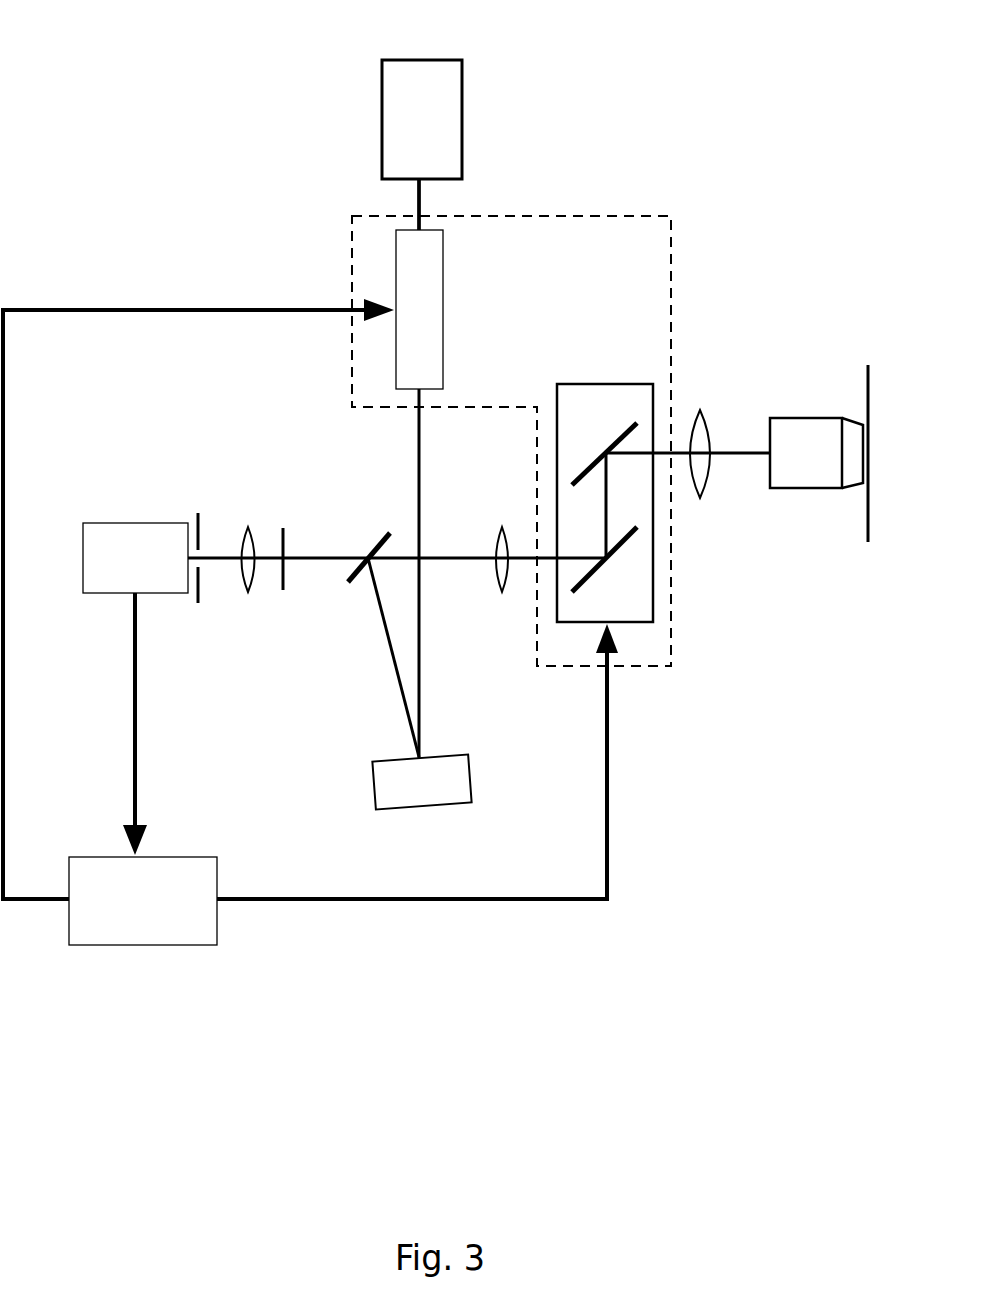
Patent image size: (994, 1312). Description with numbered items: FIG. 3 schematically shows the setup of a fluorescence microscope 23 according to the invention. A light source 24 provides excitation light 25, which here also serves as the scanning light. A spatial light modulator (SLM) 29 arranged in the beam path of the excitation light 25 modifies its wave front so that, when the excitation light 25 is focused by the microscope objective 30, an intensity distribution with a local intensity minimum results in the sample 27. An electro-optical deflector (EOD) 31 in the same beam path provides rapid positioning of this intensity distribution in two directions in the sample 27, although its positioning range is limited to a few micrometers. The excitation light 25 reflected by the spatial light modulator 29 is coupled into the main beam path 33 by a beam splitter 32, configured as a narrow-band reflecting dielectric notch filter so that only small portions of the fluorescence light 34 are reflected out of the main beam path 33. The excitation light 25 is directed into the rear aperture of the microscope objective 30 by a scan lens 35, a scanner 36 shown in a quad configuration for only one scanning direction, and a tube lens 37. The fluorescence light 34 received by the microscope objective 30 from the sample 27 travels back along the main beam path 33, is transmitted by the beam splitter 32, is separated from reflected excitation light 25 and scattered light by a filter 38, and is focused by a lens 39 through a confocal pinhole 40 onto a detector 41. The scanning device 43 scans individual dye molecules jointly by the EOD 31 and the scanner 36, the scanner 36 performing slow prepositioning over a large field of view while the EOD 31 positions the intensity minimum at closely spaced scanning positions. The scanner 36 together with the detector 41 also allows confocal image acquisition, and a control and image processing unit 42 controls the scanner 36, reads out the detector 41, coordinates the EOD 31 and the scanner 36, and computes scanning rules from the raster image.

The optical arrangement / apparatus 23 is at (115, 103).
The light source 24 is at (378, 86).
The illumination light beam 25 is at (427, 205).
The sample / object plane 27 is at (863, 390).
The beam dump / detector 29 is at (368, 783).
The objective 30 is at (800, 495).
The beam modulator / acousto-optic element 31 is at (389, 260).
The beam splitter / mirror 32 is at (380, 533).
The beam path section 33 is at (462, 555).
The beam path section 34 is at (327, 552).
The lens 35 is at (497, 593).
The scanner unit 36 is at (653, 625).
The scan lens 37 is at (702, 405).
The filter / aperture 38 is at (280, 592).
The lens 39 is at (245, 522).
The pinhole 40 is at (197, 510).
The detector 41 is at (103, 517).
The control unit 42 is at (218, 947).
The dashed enclosure / illumination module 43 is at (677, 242).